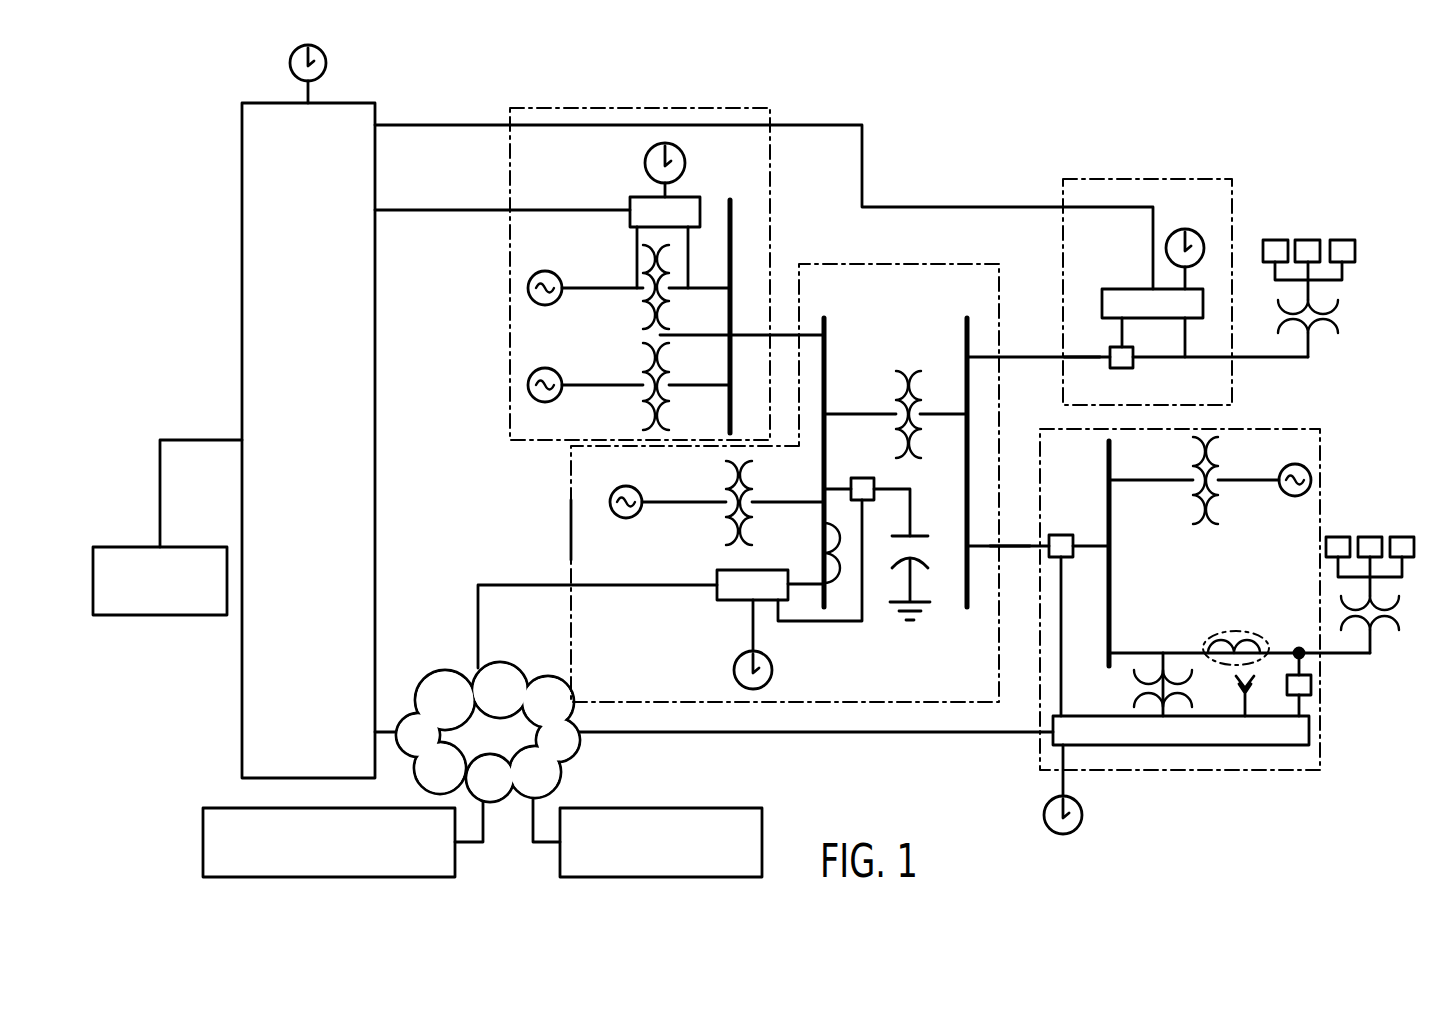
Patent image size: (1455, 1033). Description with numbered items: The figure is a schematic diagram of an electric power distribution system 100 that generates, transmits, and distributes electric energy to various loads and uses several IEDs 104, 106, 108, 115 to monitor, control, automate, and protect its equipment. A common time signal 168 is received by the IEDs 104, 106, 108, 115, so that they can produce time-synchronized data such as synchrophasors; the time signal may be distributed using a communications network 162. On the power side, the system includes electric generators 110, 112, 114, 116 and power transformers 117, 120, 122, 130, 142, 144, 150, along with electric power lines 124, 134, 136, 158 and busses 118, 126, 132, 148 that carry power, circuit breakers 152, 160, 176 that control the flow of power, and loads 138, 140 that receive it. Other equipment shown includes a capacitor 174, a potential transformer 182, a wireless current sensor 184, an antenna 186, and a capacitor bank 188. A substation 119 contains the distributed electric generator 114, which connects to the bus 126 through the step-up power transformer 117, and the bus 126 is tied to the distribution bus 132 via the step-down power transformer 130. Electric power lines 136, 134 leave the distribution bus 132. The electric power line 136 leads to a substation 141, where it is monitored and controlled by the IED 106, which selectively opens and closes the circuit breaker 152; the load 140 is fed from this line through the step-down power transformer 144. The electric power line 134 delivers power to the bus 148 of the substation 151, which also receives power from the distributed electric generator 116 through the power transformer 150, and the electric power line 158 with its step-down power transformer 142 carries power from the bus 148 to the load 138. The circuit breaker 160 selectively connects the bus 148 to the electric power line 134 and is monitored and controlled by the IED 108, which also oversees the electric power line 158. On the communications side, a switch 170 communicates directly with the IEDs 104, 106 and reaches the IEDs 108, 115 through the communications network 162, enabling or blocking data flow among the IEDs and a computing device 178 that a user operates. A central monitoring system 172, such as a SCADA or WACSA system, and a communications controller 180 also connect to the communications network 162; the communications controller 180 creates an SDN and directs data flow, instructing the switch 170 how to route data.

The electric power distribution system 100 is at (1316, 93).
The IED 104 is at (648, 197).
The IED 106 is at (1115, 289).
The IED 108 is at (1233, 745).
The electric generator 110 is at (548, 270).
The electric generator 112 is at (548, 368).
The electric generator 114 is at (629, 487).
The IED 115 is at (754, 570).
The electric generator 116 is at (1285, 497).
The power transformer 117 is at (726, 532).
The bus 118 is at (734, 204).
The substation 119 is at (571, 535).
The power transformer 120 is at (646, 316).
The power transformer 122 is at (646, 417).
The electric power line 124 is at (783, 333).
The bus 126 is at (827, 343).
The power transformer 130 is at (903, 373).
The distribution bus 132 is at (963, 592).
The electric power line 134 is at (1012, 550).
The electric power line 136 is at (1090, 358).
The load 138 is at (1370, 537).
The load 140 is at (1342, 240).
The substation 141 is at (1085, 179).
The power transformer 142 is at (1398, 615).
The power transformer 144 is at (1340, 320).
The bus 148 is at (1107, 444).
The power transformer 150 is at (1212, 437).
The substation 151 is at (1300, 770).
The circuit breaker 152 is at (1122, 368).
The electric power line 158 is at (1345, 655).
The circuit breaker 160 is at (1075, 535).
The communications network 162 is at (437, 678).
The common time signal 168 is at (327, 64).
The switch 170 is at (377, 440).
The central monitoring system 172 is at (203, 835).
The capacitor 174 is at (924, 536).
The circuit breaker 176 is at (860, 478).
The computing device 178 is at (158, 615).
The communications controller 180 is at (645, 808).
The potential transformer 182 is at (1133, 690).
The wireless current sensor 184 is at (1231, 631).
The antenna 186 is at (1255, 682).
The capacitor bank 188 is at (1311, 685).